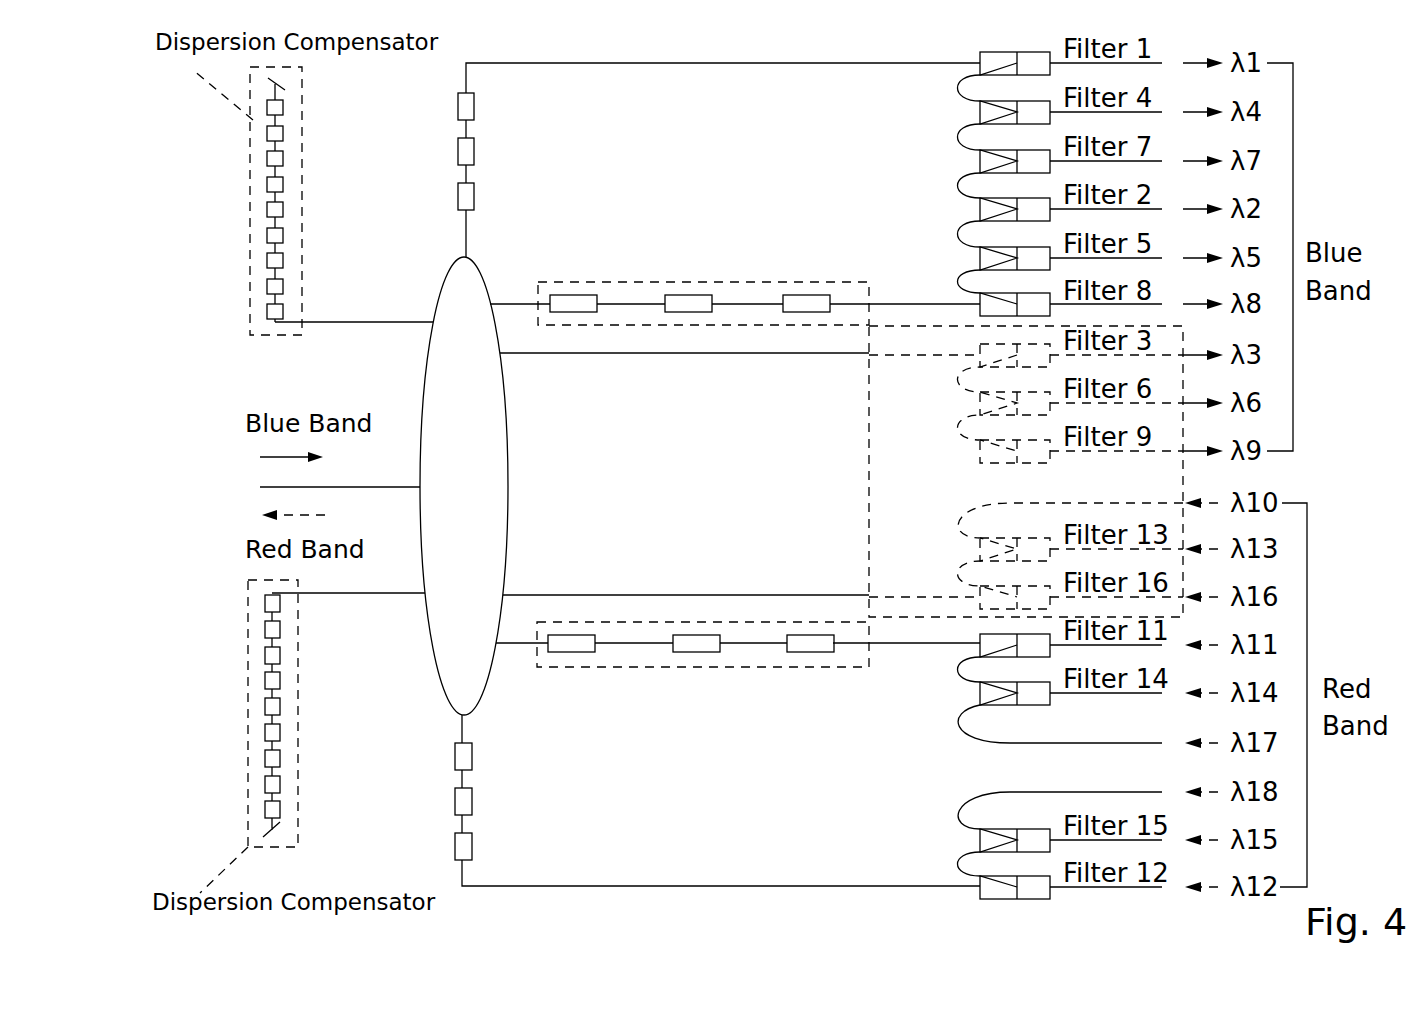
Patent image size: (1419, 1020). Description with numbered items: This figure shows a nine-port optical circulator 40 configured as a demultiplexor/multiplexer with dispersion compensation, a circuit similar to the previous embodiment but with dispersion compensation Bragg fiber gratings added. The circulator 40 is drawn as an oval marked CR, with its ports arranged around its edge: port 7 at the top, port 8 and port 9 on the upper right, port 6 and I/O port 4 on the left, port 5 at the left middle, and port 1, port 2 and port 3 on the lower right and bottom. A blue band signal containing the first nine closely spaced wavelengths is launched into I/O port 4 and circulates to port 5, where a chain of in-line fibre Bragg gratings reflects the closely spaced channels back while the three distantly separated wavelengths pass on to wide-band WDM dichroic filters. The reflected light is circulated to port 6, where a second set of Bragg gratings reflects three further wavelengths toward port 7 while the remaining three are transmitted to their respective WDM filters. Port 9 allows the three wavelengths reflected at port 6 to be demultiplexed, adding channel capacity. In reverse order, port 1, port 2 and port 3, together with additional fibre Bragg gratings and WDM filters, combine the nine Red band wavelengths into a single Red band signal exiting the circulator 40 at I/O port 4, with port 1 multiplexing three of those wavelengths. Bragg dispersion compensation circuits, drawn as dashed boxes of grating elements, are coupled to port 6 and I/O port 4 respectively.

The port 1 is at (741, 581).
The port 2 is at (738, 664).
The port 3 is at (646, 795).
The I/O port 4 is at (348, 575).
The port 5 is at (340, 470).
The port 6 is at (354, 305).
The port 7 is at (663, 163).
The port 8 is at (735, 290).
The port 9 is at (740, 338).
The 9-port circulator 40 is at (508, 460).